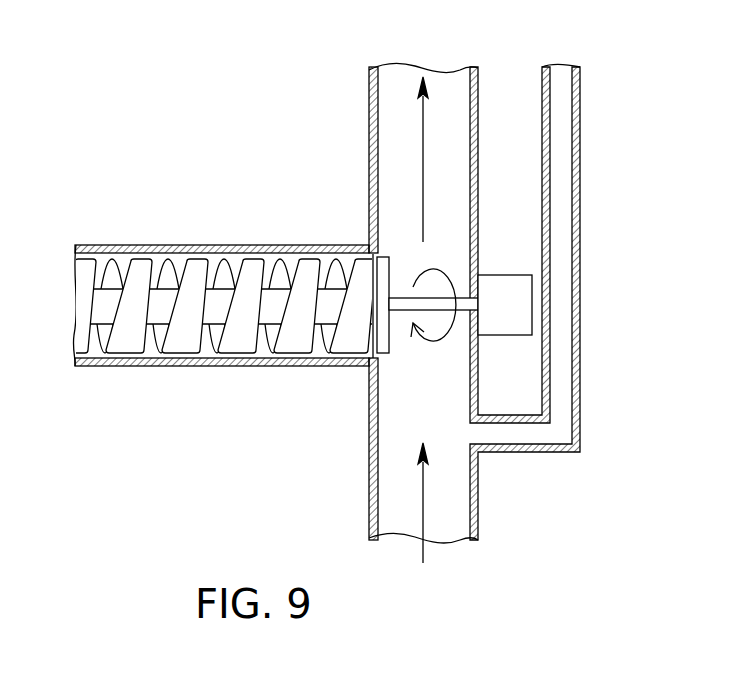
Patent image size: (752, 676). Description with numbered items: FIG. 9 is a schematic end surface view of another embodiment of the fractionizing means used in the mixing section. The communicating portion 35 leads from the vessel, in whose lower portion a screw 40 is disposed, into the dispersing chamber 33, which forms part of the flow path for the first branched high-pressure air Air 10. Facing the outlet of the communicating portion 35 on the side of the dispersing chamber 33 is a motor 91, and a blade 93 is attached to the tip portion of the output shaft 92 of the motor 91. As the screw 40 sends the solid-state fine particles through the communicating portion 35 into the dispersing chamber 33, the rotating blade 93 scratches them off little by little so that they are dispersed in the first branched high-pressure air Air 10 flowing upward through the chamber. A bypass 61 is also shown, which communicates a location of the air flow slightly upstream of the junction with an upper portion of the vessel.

The first branched high-pressure air 10 is at (427, 552).
The dispersing chamber 33 is at (390, 488).
The communicating portion 35 is at (222, 360).
The screw 40 is at (155, 262).
The bypass 61 is at (567, 367).
The motor 91 is at (507, 275).
The output shaft 92 is at (460, 312).
The blade 93 is at (396, 266).